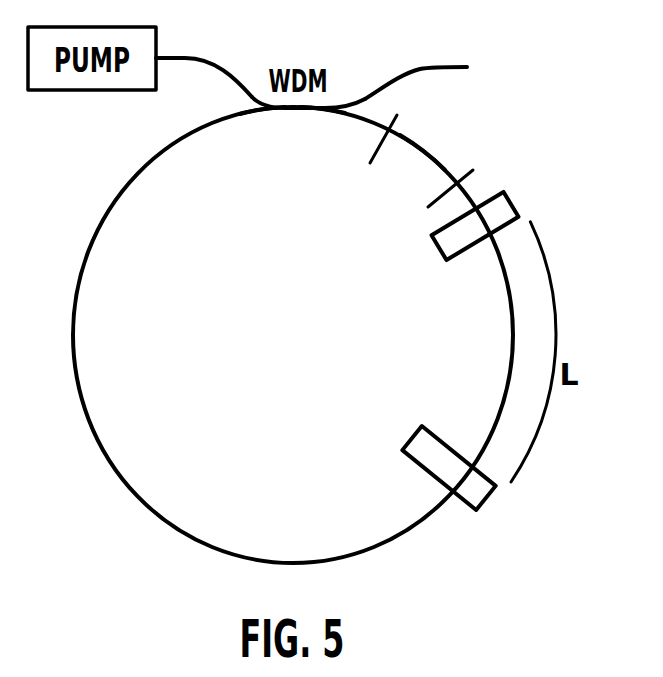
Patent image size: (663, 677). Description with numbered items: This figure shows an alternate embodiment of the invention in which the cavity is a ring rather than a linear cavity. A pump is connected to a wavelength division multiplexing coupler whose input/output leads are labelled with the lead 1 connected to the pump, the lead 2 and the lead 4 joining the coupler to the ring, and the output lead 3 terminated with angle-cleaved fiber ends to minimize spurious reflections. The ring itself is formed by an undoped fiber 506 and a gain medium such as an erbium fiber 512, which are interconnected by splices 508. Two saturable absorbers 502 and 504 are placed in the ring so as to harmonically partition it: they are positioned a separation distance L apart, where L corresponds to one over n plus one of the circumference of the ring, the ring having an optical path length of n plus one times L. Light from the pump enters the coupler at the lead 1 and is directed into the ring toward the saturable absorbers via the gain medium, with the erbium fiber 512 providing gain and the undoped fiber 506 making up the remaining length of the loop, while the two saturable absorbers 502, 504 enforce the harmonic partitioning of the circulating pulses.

The lead 1 is at (204, 68).
The lead 2 is at (262, 128).
The output lead 3 is at (416, 70).
The lead 4 is at (322, 129).
The saturable absorber 502 is at (492, 487).
The saturable absorber 504 is at (513, 200).
The undoped fiber 506 is at (93, 242).
The splices 508 is at (432, 192).
The erbium fiber 512 is at (425, 151).